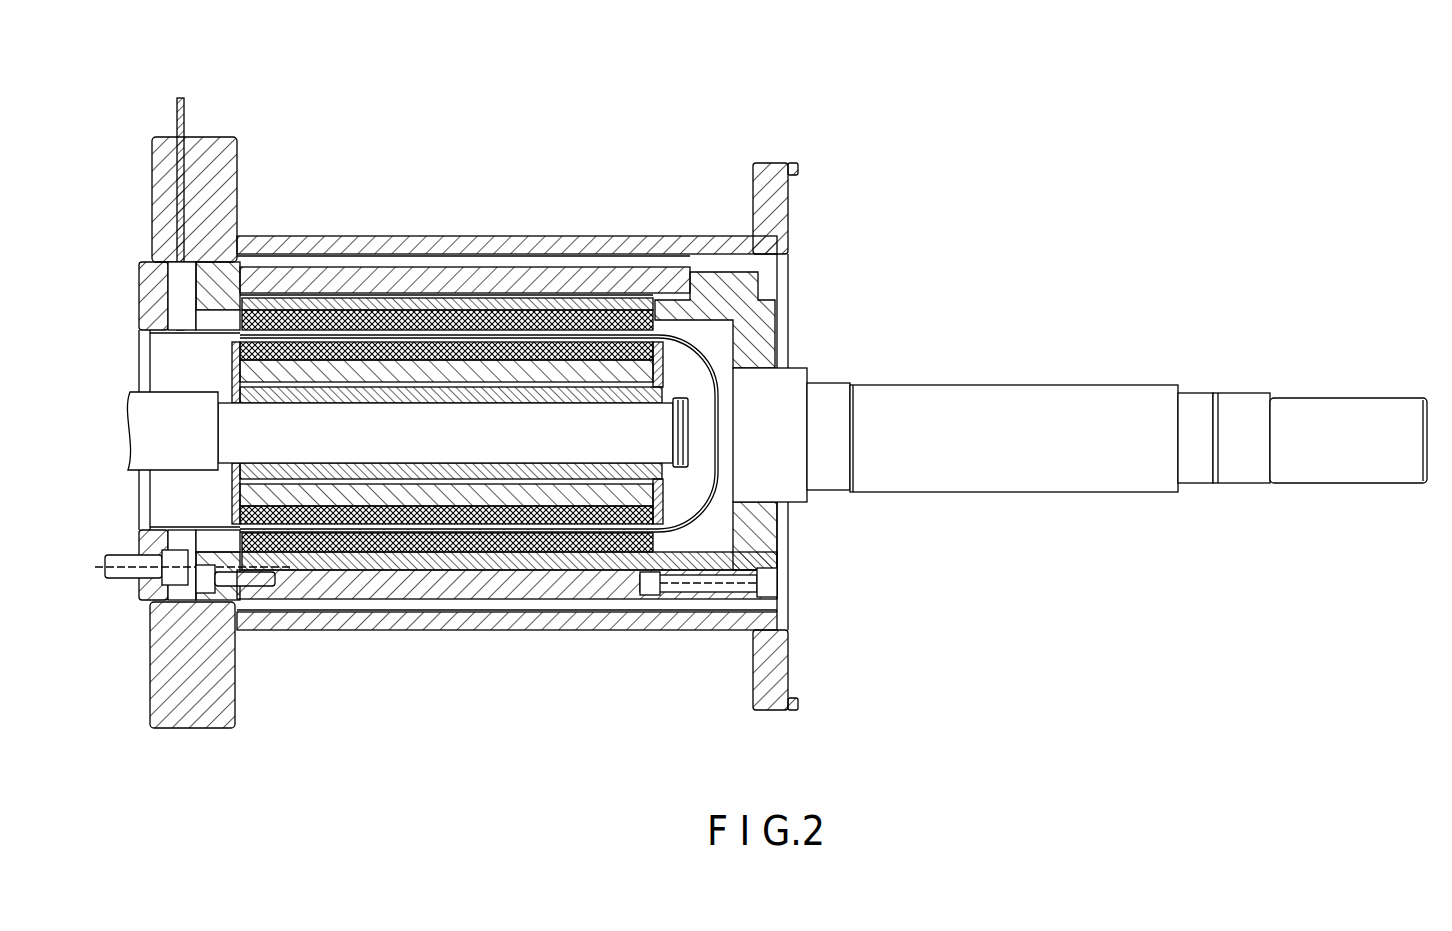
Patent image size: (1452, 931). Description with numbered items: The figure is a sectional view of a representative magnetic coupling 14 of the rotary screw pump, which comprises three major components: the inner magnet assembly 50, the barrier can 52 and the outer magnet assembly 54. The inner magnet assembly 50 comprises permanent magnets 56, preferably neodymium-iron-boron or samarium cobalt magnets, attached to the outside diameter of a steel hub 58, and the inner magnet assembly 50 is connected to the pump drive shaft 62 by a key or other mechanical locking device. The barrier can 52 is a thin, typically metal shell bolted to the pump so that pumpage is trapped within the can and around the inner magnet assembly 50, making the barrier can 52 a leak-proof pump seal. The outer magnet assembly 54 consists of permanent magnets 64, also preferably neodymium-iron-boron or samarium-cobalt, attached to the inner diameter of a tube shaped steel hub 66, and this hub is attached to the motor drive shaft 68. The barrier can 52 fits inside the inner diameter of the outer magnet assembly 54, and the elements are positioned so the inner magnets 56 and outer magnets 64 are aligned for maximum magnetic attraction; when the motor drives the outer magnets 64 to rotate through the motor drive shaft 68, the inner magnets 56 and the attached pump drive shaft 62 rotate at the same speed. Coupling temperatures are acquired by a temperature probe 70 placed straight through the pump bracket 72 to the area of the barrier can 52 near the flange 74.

The magnetic coupling 14 is at (550, 120).
The inner magnet assembly 50 is at (675, 380).
The barrier can 52 is at (722, 396).
The outer magnet assembly 54 is at (612, 318).
The permanent magnets 56 is at (655, 316).
The steel hub 58 is at (668, 362).
The pump drive shaft 62 is at (145, 412).
The permanent magnets 64 is at (475, 315).
The tube shaped steel hub 66 is at (402, 305).
The motor drive shaft 68 is at (995, 405).
The temperature probe 70 is at (184, 118).
The pump bracket 72 is at (237, 160).
The flange 74 is at (143, 261).